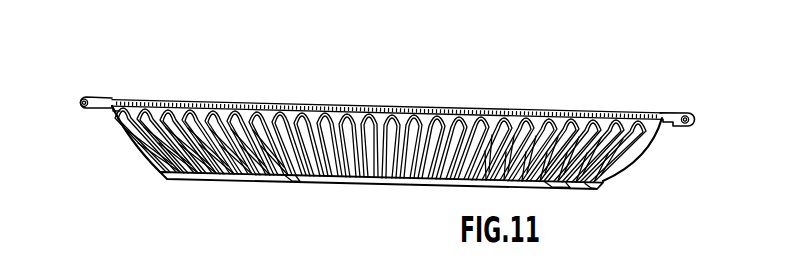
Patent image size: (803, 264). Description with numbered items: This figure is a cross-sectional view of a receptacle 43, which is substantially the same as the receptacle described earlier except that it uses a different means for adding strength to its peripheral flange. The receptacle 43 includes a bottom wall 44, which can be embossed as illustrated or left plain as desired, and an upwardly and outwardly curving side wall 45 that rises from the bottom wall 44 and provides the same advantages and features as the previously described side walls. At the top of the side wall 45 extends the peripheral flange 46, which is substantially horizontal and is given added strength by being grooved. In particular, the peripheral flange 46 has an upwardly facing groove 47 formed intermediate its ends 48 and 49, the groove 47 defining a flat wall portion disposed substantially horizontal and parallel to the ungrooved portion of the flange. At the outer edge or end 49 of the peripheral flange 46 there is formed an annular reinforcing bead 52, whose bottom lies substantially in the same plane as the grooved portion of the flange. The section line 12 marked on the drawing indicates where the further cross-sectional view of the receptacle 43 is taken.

The receptacle 43 is at (601, 60).
The bottom wall 44 is at (553, 189).
The side wall 45 is at (637, 160).
The peripheral flange 46 is at (78, 121).
The upwardly facing groove 47 is at (673, 115).
The end of peripheral flange 48 is at (116, 100).
The outer edge or end of peripheral flange 49 is at (91, 112).
The annular reinforcing bead 52 is at (83, 98).
The section line 12- 12 is at (345, 74).